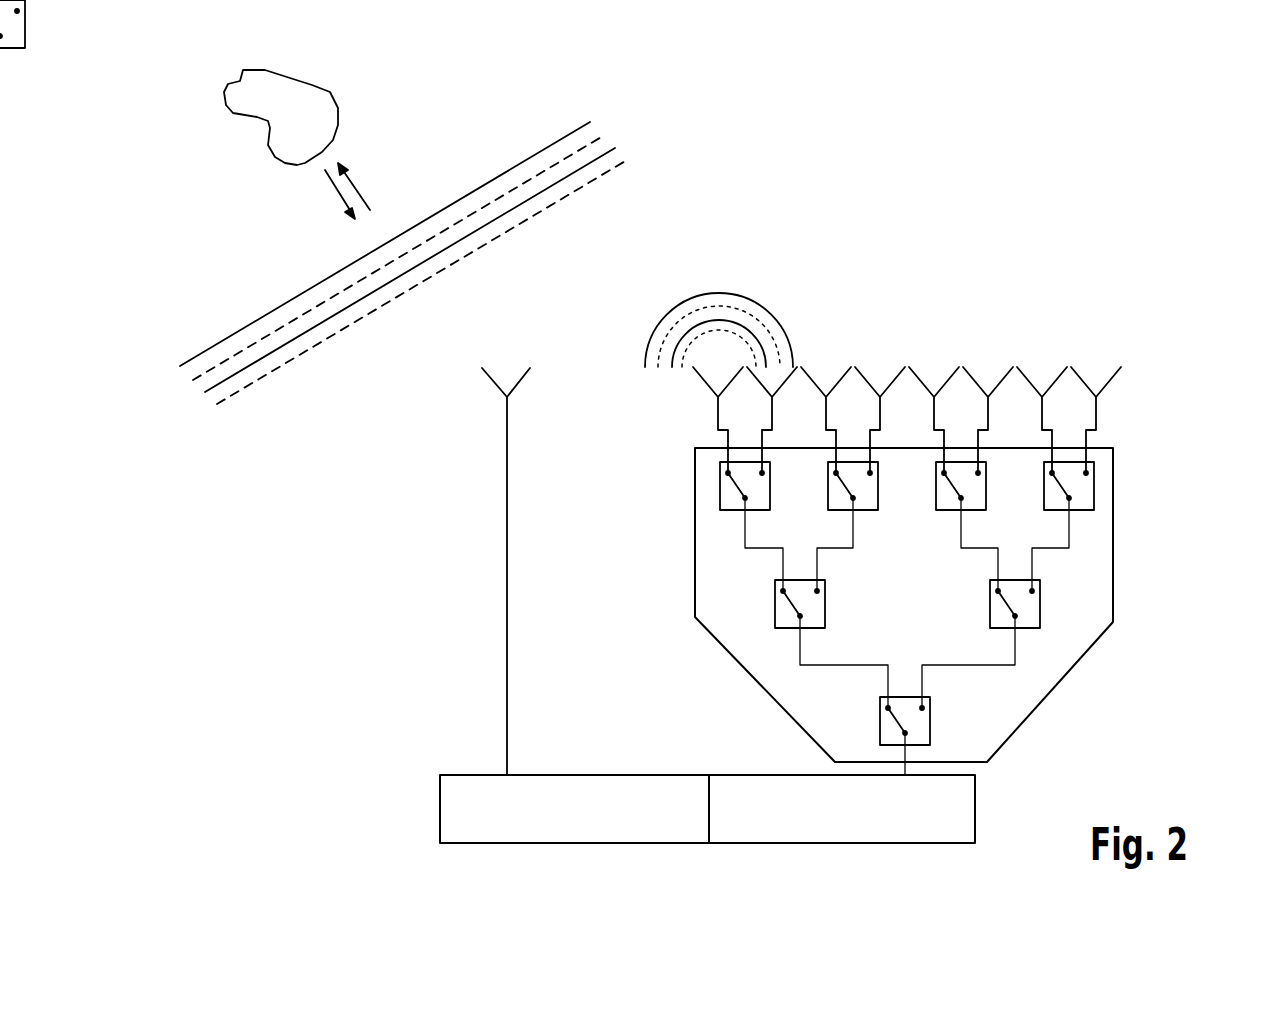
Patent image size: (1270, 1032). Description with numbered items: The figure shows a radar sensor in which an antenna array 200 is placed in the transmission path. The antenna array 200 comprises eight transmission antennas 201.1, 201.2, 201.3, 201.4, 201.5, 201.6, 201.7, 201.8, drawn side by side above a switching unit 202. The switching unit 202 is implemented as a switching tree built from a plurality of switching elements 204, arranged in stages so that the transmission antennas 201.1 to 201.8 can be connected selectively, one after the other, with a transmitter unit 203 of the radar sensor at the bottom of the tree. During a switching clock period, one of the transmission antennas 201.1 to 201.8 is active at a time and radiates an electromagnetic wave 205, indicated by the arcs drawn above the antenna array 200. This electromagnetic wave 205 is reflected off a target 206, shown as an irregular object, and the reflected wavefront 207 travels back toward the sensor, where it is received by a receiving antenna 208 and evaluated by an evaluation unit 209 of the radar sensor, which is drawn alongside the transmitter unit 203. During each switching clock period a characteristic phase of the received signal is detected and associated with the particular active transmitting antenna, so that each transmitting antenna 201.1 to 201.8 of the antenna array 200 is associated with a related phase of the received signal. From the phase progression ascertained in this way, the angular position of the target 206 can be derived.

The antenna array 200 is at (1113, 403).
The transmission antenna 201.1 is at (700, 375).
The transmission antenna 201.2 is at (758, 380).
The transmission antenna 201.3 is at (843, 377).
The transmission antenna 201.4 is at (896, 378).
The transmission antenna 201.5 is at (950, 378).
The transmission antenna 201.6 is at (1004, 378).
The transmission antenna 201.7 is at (1058, 378).
The transmission antenna 201.8 is at (1113, 377).
The switching unit 202 is at (1072, 665).
The transmitter unit 203 is at (835, 828).
The switching element 204 is at (828, 527).
The electromagnetic wave 205 is at (762, 308).
The target 206 is at (318, 102).
The reflected wavefront 207 is at (634, 166).
The receiving antenna 208 is at (509, 509).
The evaluation unit 209 is at (618, 828).